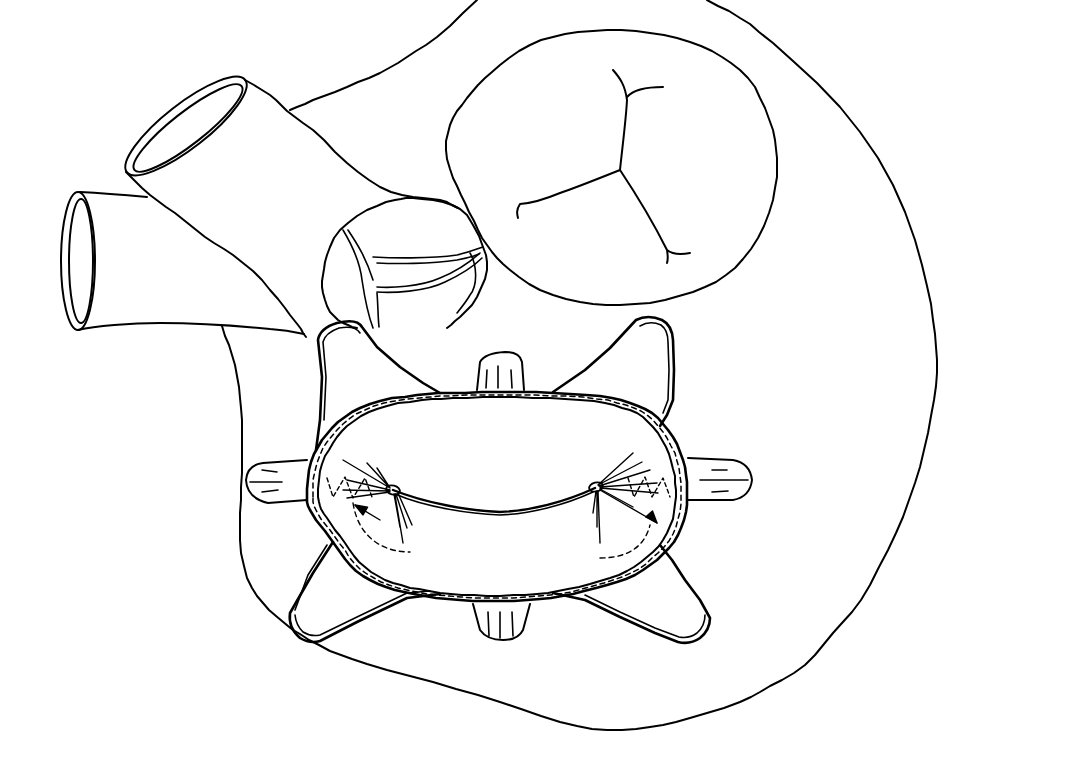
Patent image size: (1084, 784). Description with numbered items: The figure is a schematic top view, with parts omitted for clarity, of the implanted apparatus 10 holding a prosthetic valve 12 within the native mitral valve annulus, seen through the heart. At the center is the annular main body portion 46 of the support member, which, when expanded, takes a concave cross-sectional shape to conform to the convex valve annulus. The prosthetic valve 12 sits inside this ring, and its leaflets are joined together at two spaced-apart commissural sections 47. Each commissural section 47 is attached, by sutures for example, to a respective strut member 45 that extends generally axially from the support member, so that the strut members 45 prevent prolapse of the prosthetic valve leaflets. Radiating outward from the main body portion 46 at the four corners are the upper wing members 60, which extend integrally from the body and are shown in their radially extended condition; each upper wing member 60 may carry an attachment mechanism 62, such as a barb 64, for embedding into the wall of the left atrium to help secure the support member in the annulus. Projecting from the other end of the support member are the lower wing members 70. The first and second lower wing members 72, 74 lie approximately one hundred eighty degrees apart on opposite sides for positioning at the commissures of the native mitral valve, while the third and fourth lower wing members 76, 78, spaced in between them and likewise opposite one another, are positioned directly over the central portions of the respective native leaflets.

The prosthetic heart valve 10 is at (486, 517).
The prosthetic valve 12 is at (513, 572).
The strut members 45 is at (410, 548).
The main body portion 46 is at (690, 513).
The commissural sections 47 is at (400, 482).
The upper wing members 60 is at (322, 352).
The attachment mechanism 62 is at (233, 500).
The barb 64 is at (716, 462).
The lower wing members 70 is at (277, 450).
The first lower wing member 72 is at (287, 497).
The second lower wing member 74 is at (740, 497).
The third lower wing member 76 is at (510, 637).
The fourth lower wing member 78 is at (507, 357).